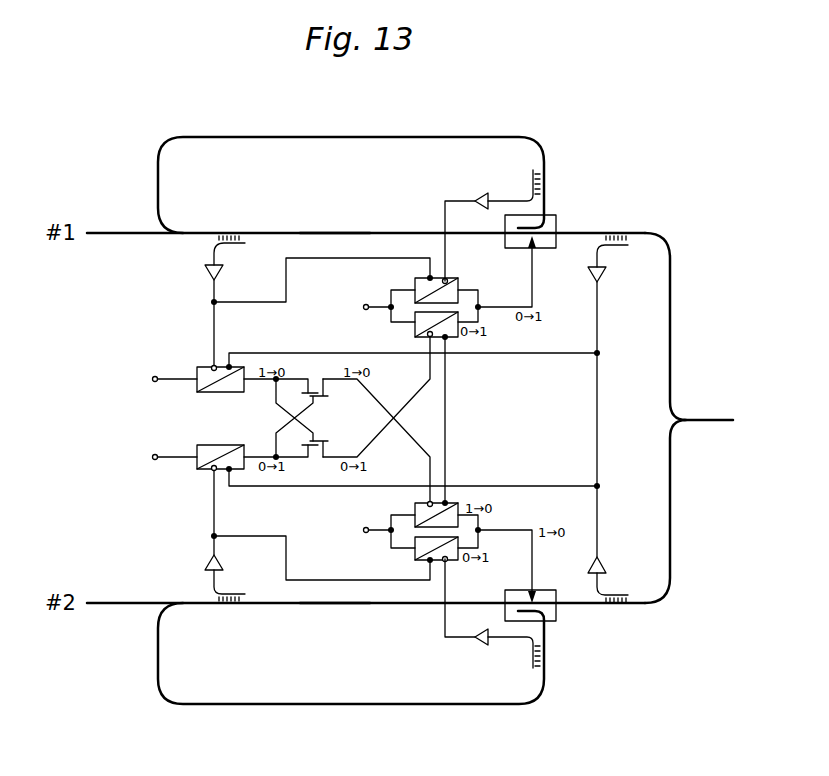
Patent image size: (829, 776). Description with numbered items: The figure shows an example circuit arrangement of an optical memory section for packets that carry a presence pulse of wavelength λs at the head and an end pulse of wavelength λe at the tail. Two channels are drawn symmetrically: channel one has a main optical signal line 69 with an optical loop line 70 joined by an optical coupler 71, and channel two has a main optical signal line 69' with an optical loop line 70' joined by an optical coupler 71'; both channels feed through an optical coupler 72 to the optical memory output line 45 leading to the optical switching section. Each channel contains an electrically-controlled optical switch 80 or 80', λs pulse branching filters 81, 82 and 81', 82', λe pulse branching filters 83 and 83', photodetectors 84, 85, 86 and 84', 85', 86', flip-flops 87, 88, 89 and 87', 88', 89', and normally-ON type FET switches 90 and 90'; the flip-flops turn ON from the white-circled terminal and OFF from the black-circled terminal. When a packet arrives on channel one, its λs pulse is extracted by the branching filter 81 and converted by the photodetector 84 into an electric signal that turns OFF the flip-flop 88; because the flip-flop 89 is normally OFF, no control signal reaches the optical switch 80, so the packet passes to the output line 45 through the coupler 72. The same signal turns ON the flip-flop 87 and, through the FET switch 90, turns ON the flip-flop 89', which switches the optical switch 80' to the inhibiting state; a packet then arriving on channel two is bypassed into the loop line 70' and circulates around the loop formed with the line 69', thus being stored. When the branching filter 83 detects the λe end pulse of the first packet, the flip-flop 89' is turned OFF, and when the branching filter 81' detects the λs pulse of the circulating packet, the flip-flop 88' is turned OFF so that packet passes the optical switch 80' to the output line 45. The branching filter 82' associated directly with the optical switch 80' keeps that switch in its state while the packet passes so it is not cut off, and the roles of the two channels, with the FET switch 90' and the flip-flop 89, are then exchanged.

The optical memory output line 45 is at (724, 425).
The main optical signal line 69 is at (335, 211).
The main optical signal line 69' is at (335, 630).
The optical loop line 70 is at (351, 163).
The optical loop line 70' is at (351, 678).
The optical coupler 71 is at (366, 256).
The optical coupler 71' is at (366, 582).
The optical coupler 72 is at (679, 430).
The electrically-controlled type optical switch 80 is at (539, 251).
The electrically-controlled type optical switch 80' is at (544, 587).
The λs pulse branching filter 81 is at (229, 228).
The λs pulse branching filter 81' is at (232, 613).
The λs pulse branching filter 82 is at (541, 177).
The λs pulse branching filter 82' is at (543, 666).
The λe pulse branching filter 83 is at (628, 231).
The λe pulse branching filter 83' is at (629, 613).
The photodetector 84 is at (196, 316).
The photodetector 84' is at (189, 519).
The photodetector 85 is at (466, 218).
The photodetector 85' is at (470, 627).
The photodetector 86 is at (615, 412).
The photodetector 86' is at (614, 548).
The flip-flop 87 is at (231, 391).
The flip-flop 87' is at (231, 444).
The flip-flop 88 is at (427, 284).
The flip-flop 88' is at (425, 558).
The flip-flop 89 is at (452, 346).
The flip-flop 89' is at (455, 497).
The normally-ON type FET switch 90 is at (320, 418).
The normally-ON type FET switch 90' is at (336, 439).